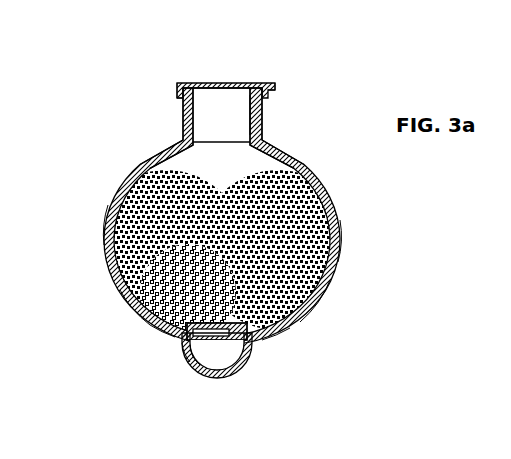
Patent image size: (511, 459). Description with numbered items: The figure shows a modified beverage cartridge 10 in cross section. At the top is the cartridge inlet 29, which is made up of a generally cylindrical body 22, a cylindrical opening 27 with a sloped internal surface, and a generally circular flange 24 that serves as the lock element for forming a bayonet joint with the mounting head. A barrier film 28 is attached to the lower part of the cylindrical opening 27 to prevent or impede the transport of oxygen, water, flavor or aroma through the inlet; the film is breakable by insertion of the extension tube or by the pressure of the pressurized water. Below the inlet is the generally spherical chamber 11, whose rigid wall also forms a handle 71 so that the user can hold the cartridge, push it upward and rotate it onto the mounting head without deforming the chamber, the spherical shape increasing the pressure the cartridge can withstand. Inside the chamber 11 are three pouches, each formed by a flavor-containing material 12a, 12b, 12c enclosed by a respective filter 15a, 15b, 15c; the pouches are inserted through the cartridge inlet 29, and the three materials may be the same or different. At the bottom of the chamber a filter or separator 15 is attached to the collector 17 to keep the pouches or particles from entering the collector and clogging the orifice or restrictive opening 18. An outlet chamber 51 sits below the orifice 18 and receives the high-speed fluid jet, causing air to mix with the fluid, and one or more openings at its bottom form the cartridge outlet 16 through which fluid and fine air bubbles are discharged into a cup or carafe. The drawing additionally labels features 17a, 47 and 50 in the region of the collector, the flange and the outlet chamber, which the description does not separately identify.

The cartridge 10 is at (344, 102).
The spherical chamber 11 is at (300, 173).
The flavor-containing material 12a is at (155, 308).
The flavor-containing material 12b is at (133, 208).
The flavor-containing material 12c is at (318, 298).
The filter or separator 15 is at (163, 335).
The filter 15a is at (162, 303).
The filter 15b is at (127, 247).
The filter 15c is at (322, 238).
The cartridge outlet 16 is at (257, 353).
The collector 17 is at (232, 350).
The wall portion adjacent fitting 17a is at (280, 332).
The orifice or restrictive opening 18 is at (215, 343).
The cylindrical body 22 is at (183, 115).
The circular flange 24 is at (178, 90).
The cylindrical opening 27 is at (208, 105).
The barrier film 28 is at (233, 83).
The cartridge inlet 29 is at (265, 121).
The flange tab 47 is at (278, 89).
The fitting inner wall 50 is at (193, 370).
The outlet chamber 51 is at (188, 355).
The handle 71 is at (335, 205).